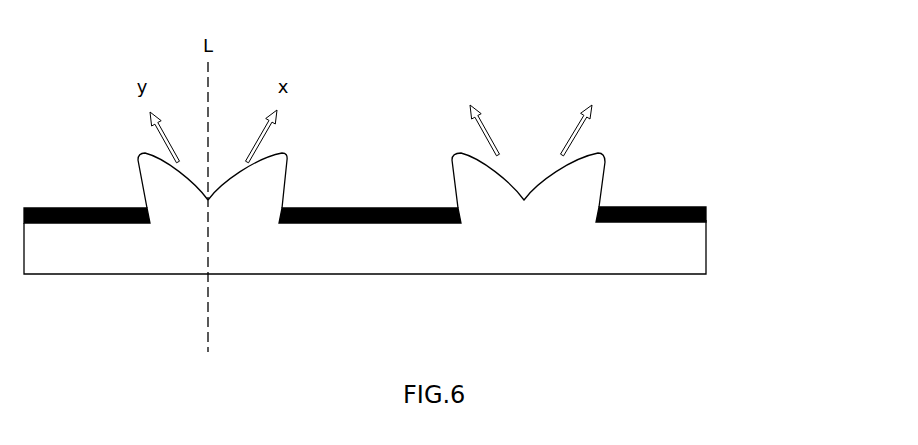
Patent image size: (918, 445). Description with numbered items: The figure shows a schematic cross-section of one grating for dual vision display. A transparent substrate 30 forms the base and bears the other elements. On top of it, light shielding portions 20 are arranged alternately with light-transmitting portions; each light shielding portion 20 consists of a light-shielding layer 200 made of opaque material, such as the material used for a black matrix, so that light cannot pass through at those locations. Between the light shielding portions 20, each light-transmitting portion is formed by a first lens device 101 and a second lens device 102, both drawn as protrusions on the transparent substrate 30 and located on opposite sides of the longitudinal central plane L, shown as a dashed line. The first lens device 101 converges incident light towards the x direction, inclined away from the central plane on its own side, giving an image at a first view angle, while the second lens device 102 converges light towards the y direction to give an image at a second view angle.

The light shielding portion 20 is at (414, 177).
The light-shielding layer 200 is at (656, 205).
The transparent substrate 30 is at (698, 258).
The first lens device 101 is at (280, 176).
The second lens device 102 is at (153, 178).